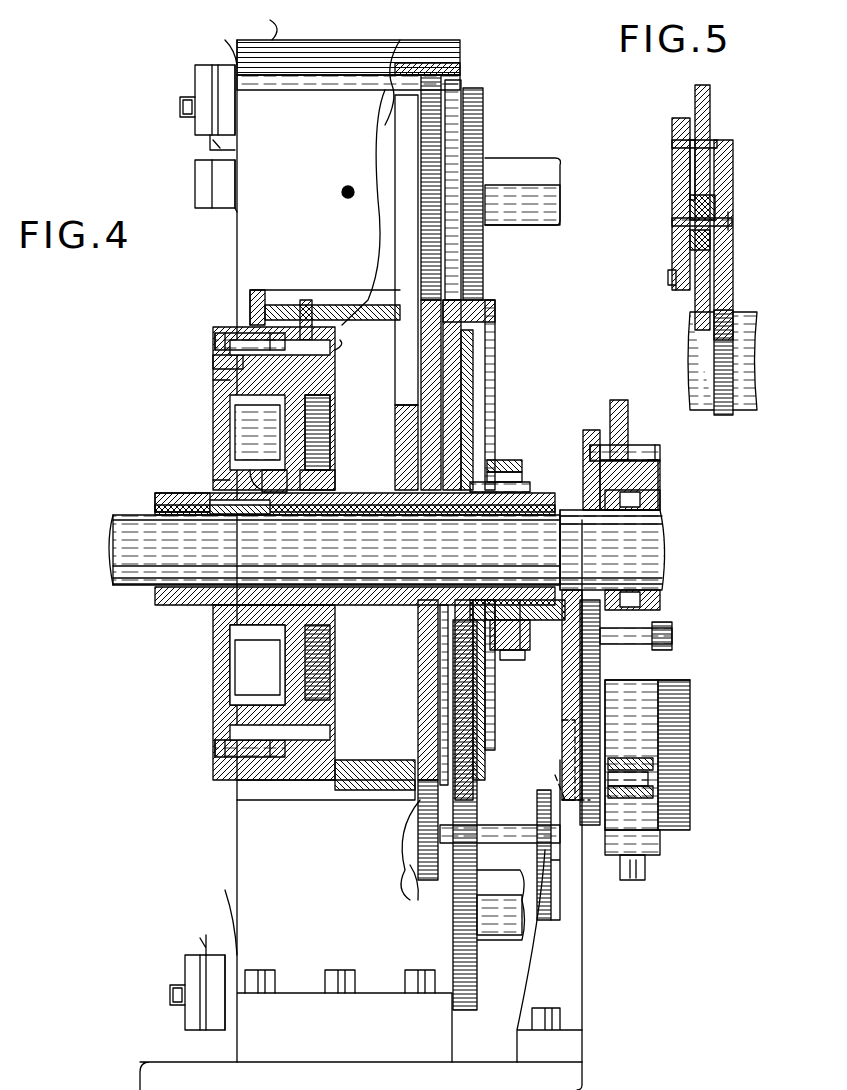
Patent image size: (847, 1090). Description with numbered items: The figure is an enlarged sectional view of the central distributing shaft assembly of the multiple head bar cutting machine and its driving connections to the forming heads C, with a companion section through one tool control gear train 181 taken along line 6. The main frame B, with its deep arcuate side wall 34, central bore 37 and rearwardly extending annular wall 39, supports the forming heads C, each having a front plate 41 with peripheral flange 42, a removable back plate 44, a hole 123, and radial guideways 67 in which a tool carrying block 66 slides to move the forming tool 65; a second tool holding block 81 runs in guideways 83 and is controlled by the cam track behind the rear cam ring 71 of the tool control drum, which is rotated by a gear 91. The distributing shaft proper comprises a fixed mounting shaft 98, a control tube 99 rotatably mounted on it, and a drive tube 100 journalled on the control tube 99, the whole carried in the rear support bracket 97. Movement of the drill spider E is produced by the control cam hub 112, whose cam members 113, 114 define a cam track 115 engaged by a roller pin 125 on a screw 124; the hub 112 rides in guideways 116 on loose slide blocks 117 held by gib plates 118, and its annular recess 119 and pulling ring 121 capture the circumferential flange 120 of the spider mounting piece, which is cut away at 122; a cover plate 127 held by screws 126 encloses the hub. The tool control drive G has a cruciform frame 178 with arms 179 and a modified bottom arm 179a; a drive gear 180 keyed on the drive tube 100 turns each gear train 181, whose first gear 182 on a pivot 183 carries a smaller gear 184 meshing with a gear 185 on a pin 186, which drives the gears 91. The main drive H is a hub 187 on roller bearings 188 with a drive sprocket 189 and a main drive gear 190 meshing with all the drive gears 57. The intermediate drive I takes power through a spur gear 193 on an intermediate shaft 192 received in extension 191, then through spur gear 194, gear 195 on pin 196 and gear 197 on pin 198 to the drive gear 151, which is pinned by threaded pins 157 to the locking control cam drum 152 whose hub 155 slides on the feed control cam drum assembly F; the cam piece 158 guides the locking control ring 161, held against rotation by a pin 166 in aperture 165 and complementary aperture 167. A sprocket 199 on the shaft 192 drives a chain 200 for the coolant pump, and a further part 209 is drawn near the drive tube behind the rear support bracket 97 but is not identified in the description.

In FIG. 4, the deep arcuate side wall 34 is at (312, 40).
In FIG. 4, the main support frame assembly B is at (264, 24).
In FIG. 4, the central bore 37 is at (385, 60).
In FIG. 4, the rear support bracket 97 is at (575, 1040).
In FIG. 4, the tool carrying block 66 is at (195, 70).
In FIG. 4, the radial guideways 67 is at (206, 487).
In FIG. 4, the forming tool 65 is at (210, 148).
In FIG. 4, the second tool holding block 81 is at (195, 180).
In FIG. 4, the guideways 83 is at (235, 212).
In FIG. 4, the rear cam ring 71 is at (395, 128).
In FIG. 4, the hole 123 is at (312, 300).
In FIG. 4, the gear 91 is at (450, 75).
In FIG. 4, the gear 57 is at (482, 90).
In FIG. 4, the removable back plate 44 is at (462, 140).
In FIG. 4, the forming heads C is at (529, 157).
In FIG. 4, the front plate portion 41 is at (250, 297).
In FIG. 4, the peripheral flange 42 is at (265, 312).
In FIG. 4, the circumferential cam member 113 is at (213, 375).
In FIG. 4, the control cam hub 112 is at (213, 410).
In FIG. 4, the drill spider E is at (226, 431).
In FIG. 4, the pulling ring 121 is at (262, 478).
In FIG. 4, the roller pin 125 is at (257, 428).
In FIG. 4, the annular recess 119 is at (280, 475).
In FIG. 4, the screws 126 is at (215, 340).
In FIG. 4, the screw 124 is at (335, 370).
In FIG. 4, the annular wall 39 is at (358, 349).
In FIG. 4, the circumferential cam member 114 is at (335, 408).
In FIG. 4, the slide blocks 117 is at (335, 475).
In FIG. 4, the gib plates 118 is at (335, 485).
In FIG. 4, the guideways 116 is at (340, 495).
In FIG. 4, the cruciform frame 178 is at (394, 450).
In FIG. 5, the cruciform frame 178 is at (658, 293).
In FIG. 4, the arms 179 is at (398, 390).
In FIG. 5, the arms 179 is at (675, 118).
In FIG. 4, the modified bottom arm 179a is at (440, 700).
In FIG. 4, the cover plate 127 is at (213, 648).
In FIG. 4, the cam track 115 is at (266, 705).
In FIG. 4, the control tube 99 is at (336, 549).
In FIG. 4, the fixed mounting shaft 98 is at (125, 580).
In FIG. 4, the cut away 122 is at (180, 517).
In FIG. 4, the circumferential flange 120 is at (240, 514).
In FIG. 4, the drive gear 180 is at (355, 523).
In FIG. 5, the drive gear 180 is at (732, 314).
In FIG. 4, the drive tube 100 is at (570, 550).
In FIG. 5, the drive tube 100 is at (700, 318).
In FIG. 4, the first gear 182 is at (470, 360).
In FIG. 5, the first gear 182 is at (733, 190).
In FIG. 4, the smaller gear 184 is at (465, 400).
In FIG. 5, the smaller gear 184 is at (695, 215).
In FIG. 4, the gear 185 is at (478, 330).
In FIG. 5, the gear 185 is at (710, 88).
In FIG. 4, the main drive gear 190 is at (480, 330).
In FIG. 4, the main drive H is at (497, 377).
In FIG. 4, the tool control drive G is at (463, 751).
In FIG. 5, the tool control drive G is at (657, 246).
In FIG. 4, the drive sprocket 189 is at (495, 460).
In FIG. 4, the hub 187 is at (520, 472).
In FIG. 4, the roller bearings 188 is at (525, 482).
In FIG. 4, the drive gear 151 is at (590, 430).
In FIG. 4, the locking control cam drum 152 is at (618, 400).
In FIG. 4, the threaded pins 157 is at (630, 445).
In FIG. 4, the hub 155 is at (655, 475).
In FIG. 4, the feed control cam drum assembly F is at (672, 493).
In FIG. 4, the gear 197 is at (580, 680).
In FIG. 4, the pin 198 is at (572, 715).
In FIG. 4, the pin 196 is at (565, 738).
In FIG. 4, the complementary aperture 167 is at (555, 780).
In FIG. 4, the bearing 209 is at (545, 615).
In FIG. 4, the intermediate drive I is at (497, 827).
In FIG. 4, the intermediate shaft 192 is at (512, 830).
In FIG. 4, the sprocket 199 is at (537, 855).
In FIG. 4, the drive chain 200 is at (552, 900).
In FIG. 4, the spur gear 194 is at (598, 865).
In FIG. 4, the circumferential cam piece 158 is at (690, 822).
In FIG. 4, the gear 195 is at (690, 748).
In FIG. 4, the aperture 165 is at (655, 780).
In FIG. 4, the pin 166 is at (655, 792).
In FIG. 4, the locking control ring 161 is at (660, 845).
In FIG. 4, the extension 191 is at (410, 870).
In FIG. 4, the spur gear 193 is at (412, 890).
In FIG. 4, the section line 6 is at (405, 25).
In FIG. 5, the tool control gear trains 181 is at (742, 146).
In FIG. 5, the pin 186 is at (672, 144).
In FIG. 5, the pivot 183 is at (730, 230).